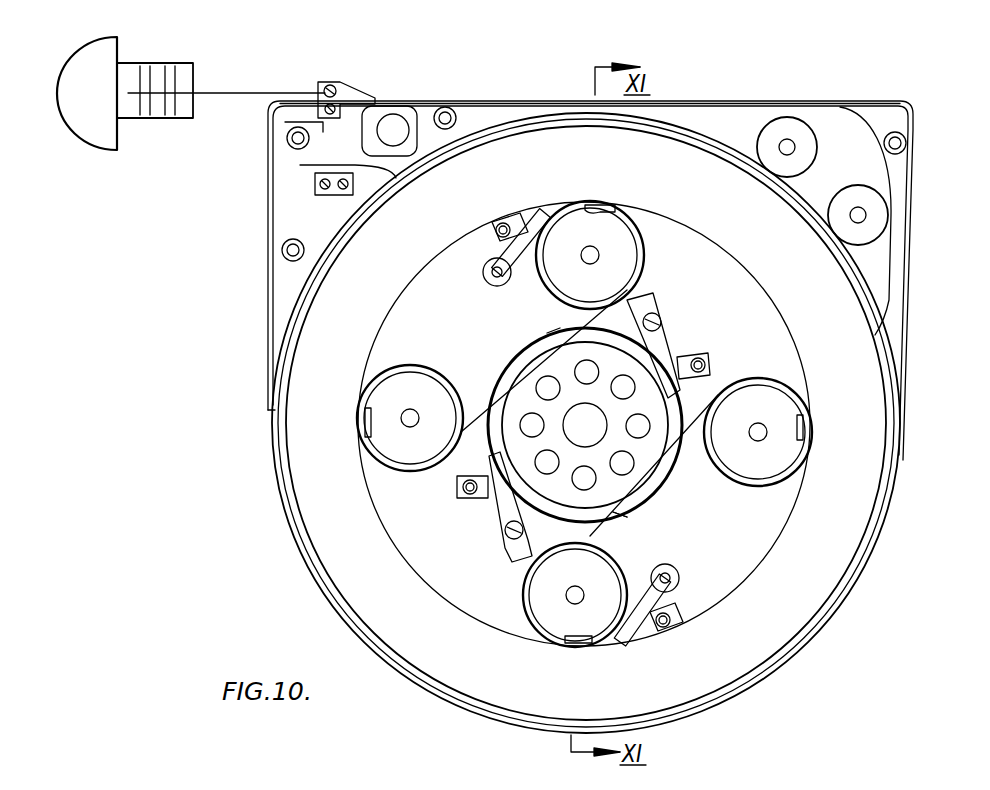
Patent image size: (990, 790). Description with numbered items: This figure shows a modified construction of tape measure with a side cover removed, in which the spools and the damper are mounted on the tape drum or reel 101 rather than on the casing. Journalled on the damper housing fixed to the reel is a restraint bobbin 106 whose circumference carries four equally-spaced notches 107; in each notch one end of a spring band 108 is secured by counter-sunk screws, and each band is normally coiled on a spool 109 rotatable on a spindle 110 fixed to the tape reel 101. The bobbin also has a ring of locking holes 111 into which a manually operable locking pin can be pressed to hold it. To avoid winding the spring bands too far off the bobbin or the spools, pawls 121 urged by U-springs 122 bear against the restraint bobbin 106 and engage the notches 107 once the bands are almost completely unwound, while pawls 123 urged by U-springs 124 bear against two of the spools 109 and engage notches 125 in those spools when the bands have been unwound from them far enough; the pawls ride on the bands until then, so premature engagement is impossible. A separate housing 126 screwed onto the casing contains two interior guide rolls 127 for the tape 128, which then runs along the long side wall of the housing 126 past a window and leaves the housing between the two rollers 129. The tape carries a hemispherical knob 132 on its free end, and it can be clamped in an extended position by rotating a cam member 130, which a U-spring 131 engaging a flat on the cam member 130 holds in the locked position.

The tape drum or reel 101 is at (312, 483).
The restraint bobbin 106 is at (656, 480).
The notches 107 is at (622, 510).
The spring band 108 is at (477, 412).
The spool 109 is at (625, 241).
The spindle 110 is at (593, 258).
The locking holes 111 is at (643, 428).
The pawls 121 is at (682, 345).
The U-springs 122 is at (690, 355).
The pawls 123 is at (540, 217).
The U-springs 124 is at (490, 268).
The notches 125 is at (600, 210).
The housing 126 is at (690, 106).
The guide rolls 127 is at (860, 207).
The tape 128 is at (890, 255).
The rollers 129 is at (330, 100).
The cam member 130 is at (396, 128).
The U-spring 131 is at (300, 165).
The hemispherical knob 132 is at (95, 125).